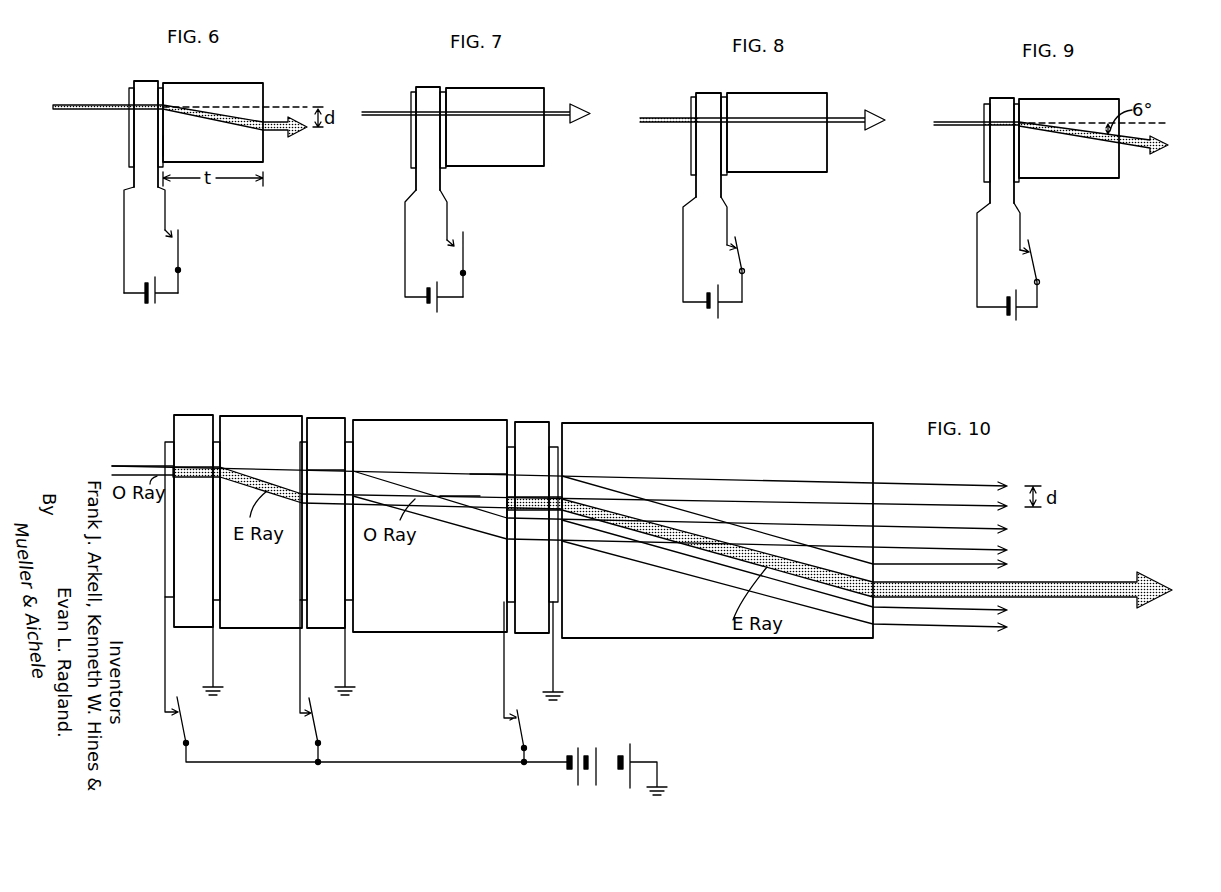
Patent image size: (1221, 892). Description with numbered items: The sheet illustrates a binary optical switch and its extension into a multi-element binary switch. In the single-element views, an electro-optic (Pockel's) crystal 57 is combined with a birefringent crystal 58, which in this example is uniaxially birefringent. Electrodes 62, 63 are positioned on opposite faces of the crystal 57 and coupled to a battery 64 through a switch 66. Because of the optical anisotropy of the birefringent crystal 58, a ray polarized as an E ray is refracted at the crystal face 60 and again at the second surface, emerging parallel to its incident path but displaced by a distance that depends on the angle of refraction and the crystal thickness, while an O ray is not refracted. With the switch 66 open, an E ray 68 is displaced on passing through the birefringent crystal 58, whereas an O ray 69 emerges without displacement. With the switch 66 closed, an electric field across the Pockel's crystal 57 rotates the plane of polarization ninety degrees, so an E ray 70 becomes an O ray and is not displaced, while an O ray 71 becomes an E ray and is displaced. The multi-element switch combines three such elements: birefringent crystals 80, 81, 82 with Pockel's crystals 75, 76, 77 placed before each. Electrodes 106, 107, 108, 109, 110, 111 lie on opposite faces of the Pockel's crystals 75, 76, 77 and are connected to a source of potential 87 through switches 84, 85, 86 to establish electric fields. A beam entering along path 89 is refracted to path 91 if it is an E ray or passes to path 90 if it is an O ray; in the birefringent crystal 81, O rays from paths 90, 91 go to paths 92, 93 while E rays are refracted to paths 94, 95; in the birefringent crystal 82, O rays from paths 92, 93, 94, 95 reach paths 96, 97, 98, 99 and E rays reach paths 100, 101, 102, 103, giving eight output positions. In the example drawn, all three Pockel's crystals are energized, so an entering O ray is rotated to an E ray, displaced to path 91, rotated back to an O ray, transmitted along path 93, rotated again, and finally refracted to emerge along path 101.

In FIG. 6, the electro-optic crystal 57 is at (154, 81).
In FIG. 7, the electro-optic crystal 57 is at (441, 87).
In FIG. 8, the electro-optic crystal 57 is at (717, 93).
In FIG. 9, the electro-optic crystal 57 is at (1007, 98).
In FIG. 6, the birefringent crystal 58 is at (247, 82).
In FIG. 7, the birefringent crystal 58 is at (495, 88).
In FIG. 8, the birefringent crystal 58 is at (777, 93).
In FIG. 9, the birefringent crystal 58 is at (1073, 99).
In FIG. 6, the crystal face 60 is at (164, 147).
In FIG. 6, the electrode 62 is at (129, 133).
In FIG. 7, the electrode 62 is at (408, 143).
In FIG. 8, the electrode 62 is at (692, 148).
In FIG. 9, the electrode 62 is at (985, 152).
In FIG. 6, the electrode 63 is at (161, 125).
In FIG. 7, the electrode 63 is at (444, 143).
In FIG. 8, the electrode 63 is at (727, 148).
In FIG. 9, the electrode 63 is at (1020, 153).
In FIG. 6, the battery 64 is at (156, 279).
In FIG. 7, the battery 64 is at (440, 281).
In FIG. 8, the battery 64 is at (707, 296).
In FIG. 9, the battery 64 is at (1016, 291).
In FIG. 6, the switch 66 is at (179, 249).
In FIG. 7, the switch 66 is at (464, 251).
In FIG. 8, the switch 66 is at (740, 256).
In FIG. 9, the switch 66 is at (1033, 261).
In FIG. 6, the E ray 68 is at (99, 105).
In FIG. 7, the O ray 69 is at (398, 109).
In FIG. 8, the E ray 70 is at (676, 114).
In FIG. 9, the O ray 71 is at (969, 121).
In FIG. 10, the Pockel's crystal 75 is at (201, 404).
In FIG. 10, the Pockel's crystal 76 is at (328, 417).
In FIG. 10, the Pockel's crystal 77 is at (534, 422).
In FIG. 10, the birefringent crystal 80 is at (248, 416).
In FIG. 10, the birefringent crystal 81 is at (433, 420).
In FIG. 10, the birefringent crystal 82 is at (657, 423).
In FIG. 10, the switch 84 is at (182, 712).
In FIG. 10, the switch 85 is at (313, 714).
In FIG. 10, the switch 86 is at (518, 720).
In FIG. 10, the source of potential 87 is at (607, 760).
In FIG. 10, the path 89 is at (147, 465).
In FIG. 10, the path 90 is at (317, 467).
In FIG. 10, the path 91 is at (322, 503).
In FIG. 10, the path 92 is at (485, 473).
In FIG. 10, the path 93 is at (462, 496).
In FIG. 10, the path 94 is at (480, 508).
In FIG. 10, the path 95 is at (495, 538).
In FIG. 10, the path 96 is at (893, 486).
In FIG. 10, the path 97 is at (893, 506).
In FIG. 10, the path 98 is at (893, 527).
In FIG. 10, the path 99 is at (893, 548).
In FIG. 10, the path 100 is at (893, 564).
In FIG. 10, the path 101 is at (1088, 590).
In FIG. 10, the path 102 is at (912, 610).
In FIG. 10, the path 103 is at (912, 627).
In FIG. 10, the electrode 106 is at (166, 576).
In FIG. 10, the electrode 107 is at (215, 590).
In FIG. 10, the electrode 108 is at (300, 567).
In FIG. 10, the electrode 109 is at (348, 563).
In FIG. 10, the electrode 110 is at (505, 590).
In FIG. 10, the electrode 111 is at (556, 592).